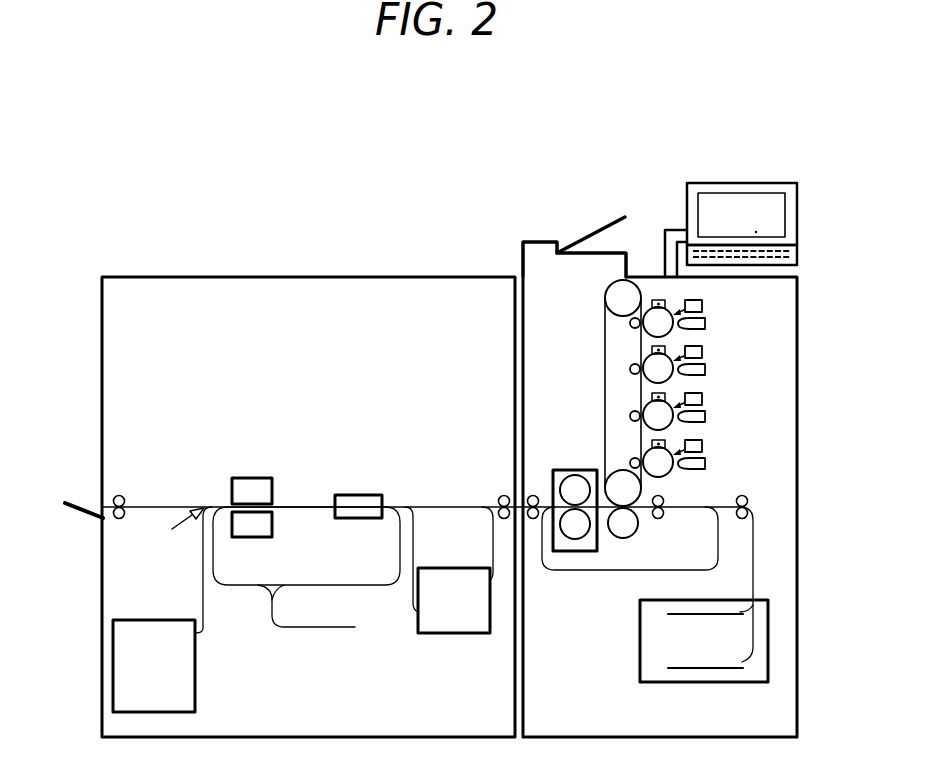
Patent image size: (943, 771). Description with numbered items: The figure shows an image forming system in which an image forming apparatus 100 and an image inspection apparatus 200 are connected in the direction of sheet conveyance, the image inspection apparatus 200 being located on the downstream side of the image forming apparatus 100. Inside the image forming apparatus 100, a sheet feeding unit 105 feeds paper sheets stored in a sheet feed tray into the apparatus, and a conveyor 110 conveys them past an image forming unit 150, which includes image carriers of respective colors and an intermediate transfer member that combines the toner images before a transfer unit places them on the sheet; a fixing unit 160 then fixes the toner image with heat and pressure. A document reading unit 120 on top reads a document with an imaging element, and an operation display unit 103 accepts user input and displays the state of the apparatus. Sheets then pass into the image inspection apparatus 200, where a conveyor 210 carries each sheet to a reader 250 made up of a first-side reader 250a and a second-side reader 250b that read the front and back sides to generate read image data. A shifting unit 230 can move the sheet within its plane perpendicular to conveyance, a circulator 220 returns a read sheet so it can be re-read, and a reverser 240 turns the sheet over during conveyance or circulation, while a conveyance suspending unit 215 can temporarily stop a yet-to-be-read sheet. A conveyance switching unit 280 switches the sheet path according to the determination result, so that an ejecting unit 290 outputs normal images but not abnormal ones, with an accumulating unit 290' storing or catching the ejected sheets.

The image forming apparatus 100 is at (642, 277).
The operation display unit 103 is at (724, 183).
The sheet feeding unit 105 is at (672, 642).
The conveyor 110 is at (700, 499).
The document reading unit 120 is at (548, 242).
The image forming unit 150 is at (718, 306).
The fixing unit 160 is at (567, 470).
The image inspection apparatus 200 is at (311, 283).
The conveyor 210 is at (155, 504).
The conveyance suspending unit 215 is at (452, 568).
The circulator 220 is at (320, 585).
The shifting unit 230 is at (358, 495).
The reverser 240 is at (318, 627).
The reader 250 is at (274, 466).
The first-side reader 250a is at (250, 478).
The second-side reader 250b is at (273, 523).
The conveyance switching unit 280 is at (183, 570).
The ejecting unit 290 is at (84, 489).
The accumulating unit 290' is at (154, 645).